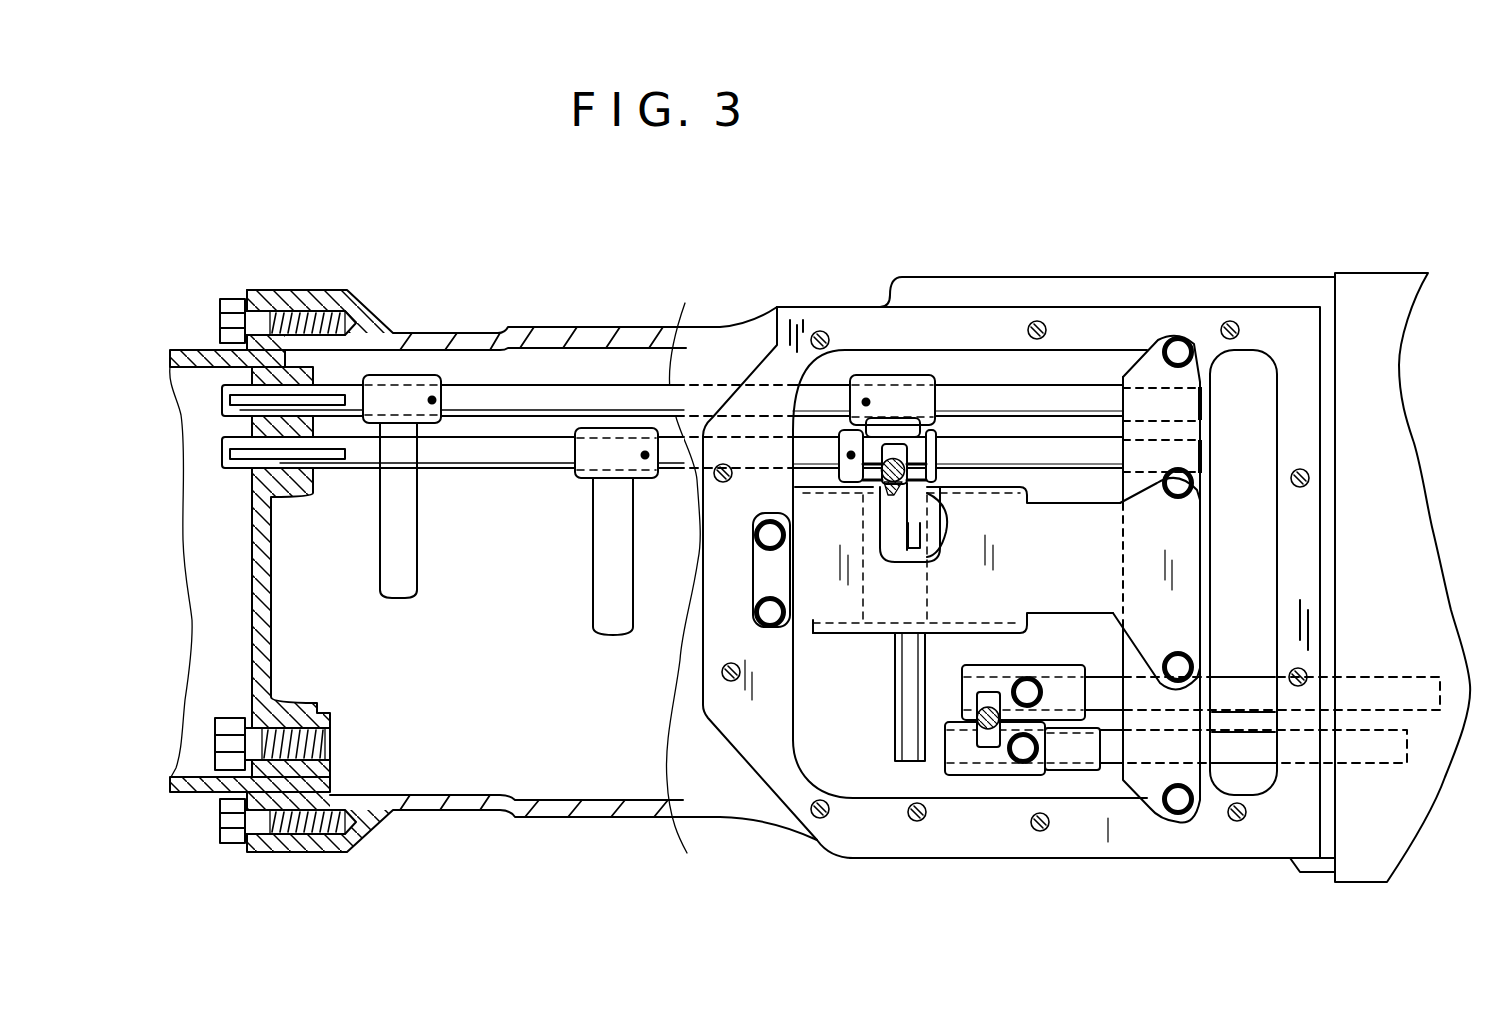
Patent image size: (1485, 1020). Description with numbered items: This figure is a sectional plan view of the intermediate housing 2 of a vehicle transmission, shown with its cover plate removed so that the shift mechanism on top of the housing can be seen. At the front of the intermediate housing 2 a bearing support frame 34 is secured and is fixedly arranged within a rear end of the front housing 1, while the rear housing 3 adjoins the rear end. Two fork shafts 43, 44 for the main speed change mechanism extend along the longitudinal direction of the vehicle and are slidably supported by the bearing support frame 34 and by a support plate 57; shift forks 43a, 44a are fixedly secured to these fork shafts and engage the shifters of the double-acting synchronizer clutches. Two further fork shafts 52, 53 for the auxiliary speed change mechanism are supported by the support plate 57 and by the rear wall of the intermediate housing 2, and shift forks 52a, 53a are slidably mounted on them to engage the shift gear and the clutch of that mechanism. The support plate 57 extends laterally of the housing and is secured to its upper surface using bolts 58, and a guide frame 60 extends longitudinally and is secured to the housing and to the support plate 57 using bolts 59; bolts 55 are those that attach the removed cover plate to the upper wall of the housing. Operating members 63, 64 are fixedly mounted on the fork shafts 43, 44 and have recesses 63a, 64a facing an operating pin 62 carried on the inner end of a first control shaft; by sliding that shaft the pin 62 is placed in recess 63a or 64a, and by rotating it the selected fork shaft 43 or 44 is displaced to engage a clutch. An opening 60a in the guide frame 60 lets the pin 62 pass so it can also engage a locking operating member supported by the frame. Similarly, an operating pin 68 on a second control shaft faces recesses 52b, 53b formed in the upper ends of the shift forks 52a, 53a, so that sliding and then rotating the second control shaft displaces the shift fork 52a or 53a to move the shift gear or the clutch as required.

The front housing 1 is at (192, 348).
The intermediate housing 2 is at (600, 330).
The rear housing 3 is at (1362, 290).
The bearing support frame 34 is at (258, 575).
The fork shaft 43 is at (483, 403).
The shift fork 43a is at (390, 575).
The fork shaft 44 is at (497, 455).
The shift fork 44a is at (600, 600).
The fork shaft 52 is at (1250, 697).
The shift fork 52a is at (1060, 690).
The recess 52b is at (990, 695).
The fork shaft 53 is at (1237, 760).
The shift fork 53a is at (1003, 770).
The recess 53b is at (985, 745).
The bolts 55 is at (1226, 322).
The support plate 57 is at (1197, 430).
The bolts 58 is at (1163, 346).
The bolts 59 is at (770, 613).
The guide frame 60 is at (957, 603).
The opening 60a is at (950, 528).
The operating pin 62 is at (905, 468).
The operating member 63 is at (870, 380).
The recess 63a is at (897, 450).
The operating member 64 is at (925, 478).
The recess 64a is at (884, 496).
The operating pin 68 is at (990, 722).